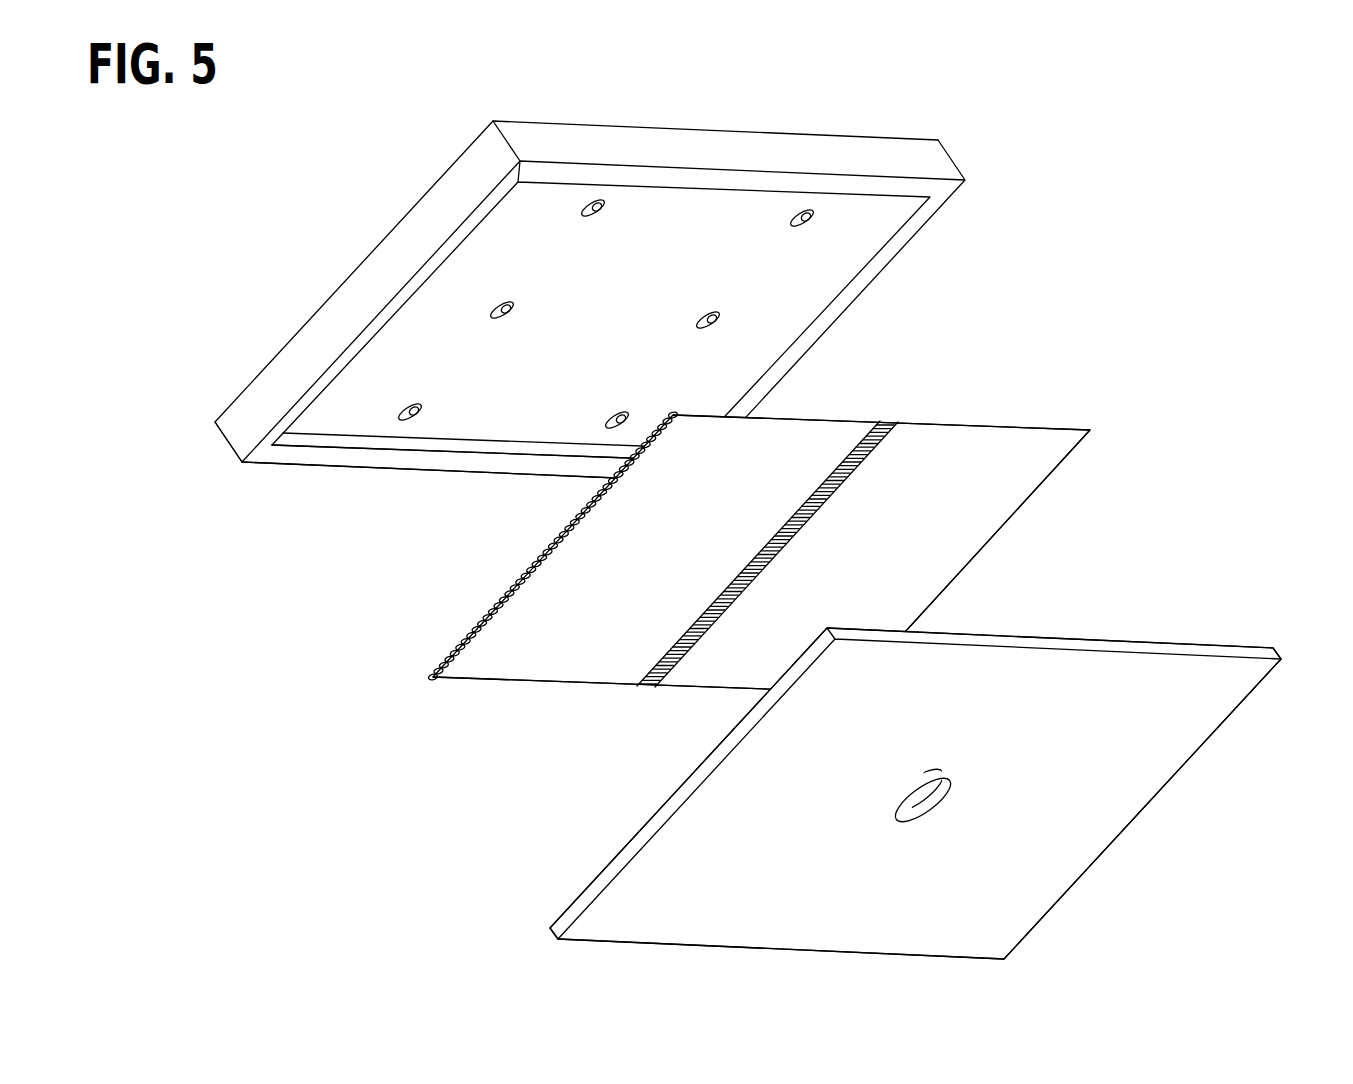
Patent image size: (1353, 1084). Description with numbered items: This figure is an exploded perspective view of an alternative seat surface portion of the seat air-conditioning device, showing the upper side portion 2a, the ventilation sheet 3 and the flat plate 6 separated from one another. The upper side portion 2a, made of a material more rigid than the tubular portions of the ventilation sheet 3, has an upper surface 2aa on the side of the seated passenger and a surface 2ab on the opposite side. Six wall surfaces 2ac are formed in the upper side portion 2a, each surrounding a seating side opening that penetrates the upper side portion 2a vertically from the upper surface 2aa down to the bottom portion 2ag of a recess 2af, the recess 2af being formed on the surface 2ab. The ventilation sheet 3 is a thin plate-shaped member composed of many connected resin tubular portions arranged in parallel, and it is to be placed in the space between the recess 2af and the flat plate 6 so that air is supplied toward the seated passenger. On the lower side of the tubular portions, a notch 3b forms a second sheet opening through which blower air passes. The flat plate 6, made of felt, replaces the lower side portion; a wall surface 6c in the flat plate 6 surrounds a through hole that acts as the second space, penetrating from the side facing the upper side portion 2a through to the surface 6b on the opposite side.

The upper side portion 2a is at (638, 315).
The upper surface 2aa is at (530, 143).
The surface 2ab is at (293, 462).
The wall surface 2ac is at (503, 300).
The recess 2af is at (370, 446).
The bottom portion 2ag is at (472, 406).
The ventilation sheet 3 is at (804, 527).
The notch 3b is at (886, 424).
The flat plate 6 is at (933, 776).
The surface 6b is at (1068, 848).
The wall surface 6c is at (945, 783).